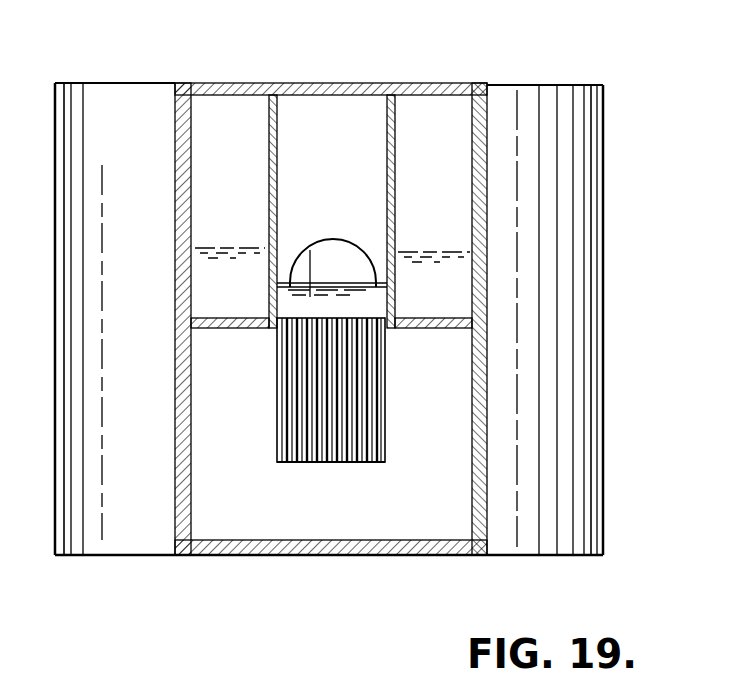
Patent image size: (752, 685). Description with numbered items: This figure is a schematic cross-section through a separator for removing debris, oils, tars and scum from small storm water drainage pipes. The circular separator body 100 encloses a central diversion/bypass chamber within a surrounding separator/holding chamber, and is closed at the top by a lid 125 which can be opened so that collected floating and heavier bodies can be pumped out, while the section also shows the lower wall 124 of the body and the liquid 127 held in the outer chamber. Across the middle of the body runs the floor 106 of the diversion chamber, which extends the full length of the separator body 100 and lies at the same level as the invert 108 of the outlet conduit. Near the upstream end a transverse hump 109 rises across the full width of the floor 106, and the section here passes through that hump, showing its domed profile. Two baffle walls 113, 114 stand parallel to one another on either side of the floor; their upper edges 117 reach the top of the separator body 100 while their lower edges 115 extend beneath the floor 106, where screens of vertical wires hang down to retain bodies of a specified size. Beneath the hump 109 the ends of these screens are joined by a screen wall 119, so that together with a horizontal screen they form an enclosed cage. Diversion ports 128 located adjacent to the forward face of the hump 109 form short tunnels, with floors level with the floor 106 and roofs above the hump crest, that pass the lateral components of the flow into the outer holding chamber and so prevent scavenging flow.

The separator body 100 is at (582, 76).
The lid 125 is at (263, 85).
The bottom wall 124 is at (250, 555).
The baffle wall 114 is at (269, 136).
The baffle wall 113 is at (395, 149).
The upper edges of the baffles 117 is at (383, 98).
The invert of the outlet conduit 108 is at (349, 254).
The transverse hump 109 is at (310, 250).
The diversion ports 128 is at (395, 305).
The liquid in side compartment 127 is at (428, 250).
The floor 106 is at (215, 330).
The lower edges of the baffles 115 is at (386, 398).
The screen wall 119 is at (294, 468).